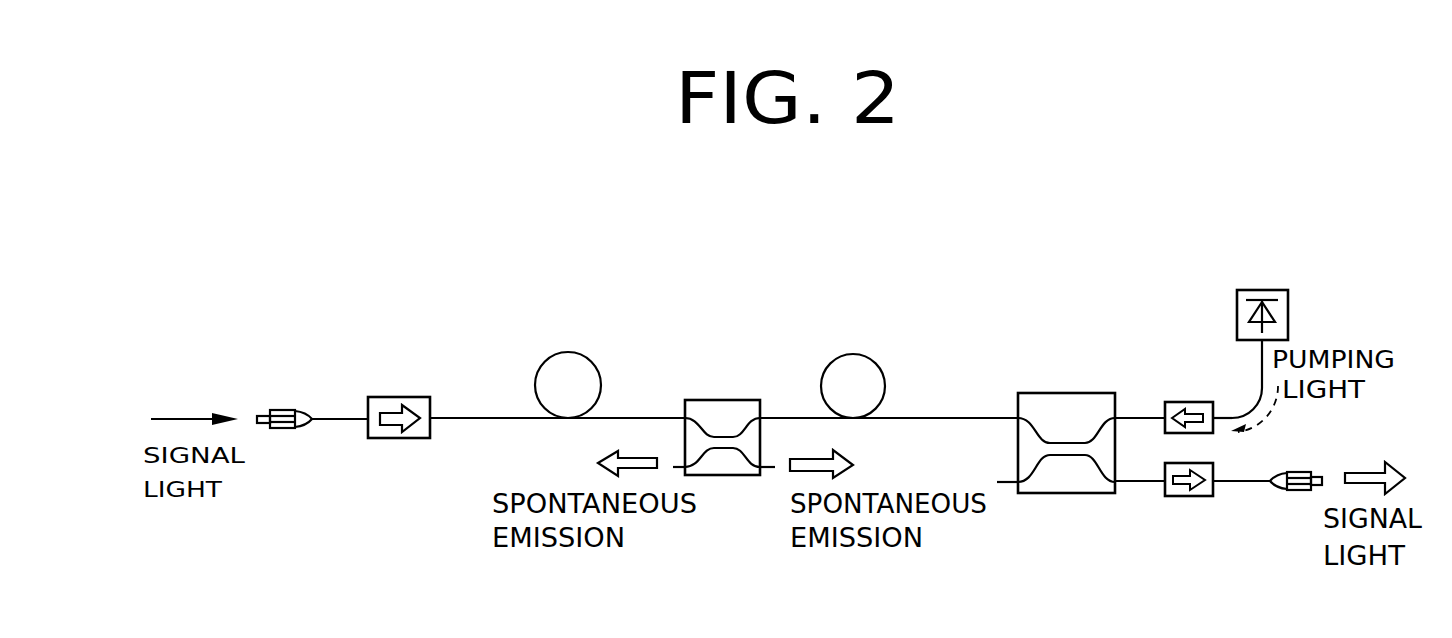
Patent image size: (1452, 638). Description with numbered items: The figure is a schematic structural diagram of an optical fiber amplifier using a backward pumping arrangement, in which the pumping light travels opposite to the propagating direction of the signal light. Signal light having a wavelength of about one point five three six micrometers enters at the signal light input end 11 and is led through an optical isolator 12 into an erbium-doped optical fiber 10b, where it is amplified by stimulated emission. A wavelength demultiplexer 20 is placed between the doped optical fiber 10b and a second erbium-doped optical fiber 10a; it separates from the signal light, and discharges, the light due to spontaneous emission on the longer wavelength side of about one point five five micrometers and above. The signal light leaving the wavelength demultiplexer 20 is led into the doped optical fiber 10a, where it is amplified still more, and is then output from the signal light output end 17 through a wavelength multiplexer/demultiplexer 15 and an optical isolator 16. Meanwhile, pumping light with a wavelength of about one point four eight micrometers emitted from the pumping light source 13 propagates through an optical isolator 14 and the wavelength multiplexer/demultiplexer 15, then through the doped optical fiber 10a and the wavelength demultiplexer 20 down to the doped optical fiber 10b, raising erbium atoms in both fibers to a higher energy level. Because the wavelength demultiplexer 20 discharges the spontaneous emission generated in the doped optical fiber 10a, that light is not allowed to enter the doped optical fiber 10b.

The erbium-doped optical fiber 10a is at (852, 354).
The erbium-doped optical fiber 10b is at (565, 352).
The signal light input end 11 is at (283, 405).
The optical isolator 12 is at (398, 397).
The pumping light source 13 is at (1262, 290).
The optical isolator 14 is at (1187, 402).
The wavelength multiplexer/demultiplexer 15 is at (1064, 393).
The optical isolator 16 is at (1189, 496).
The signal light output end 17 is at (1277, 490).
The wavelength demultiplexer 20 is at (717, 400).